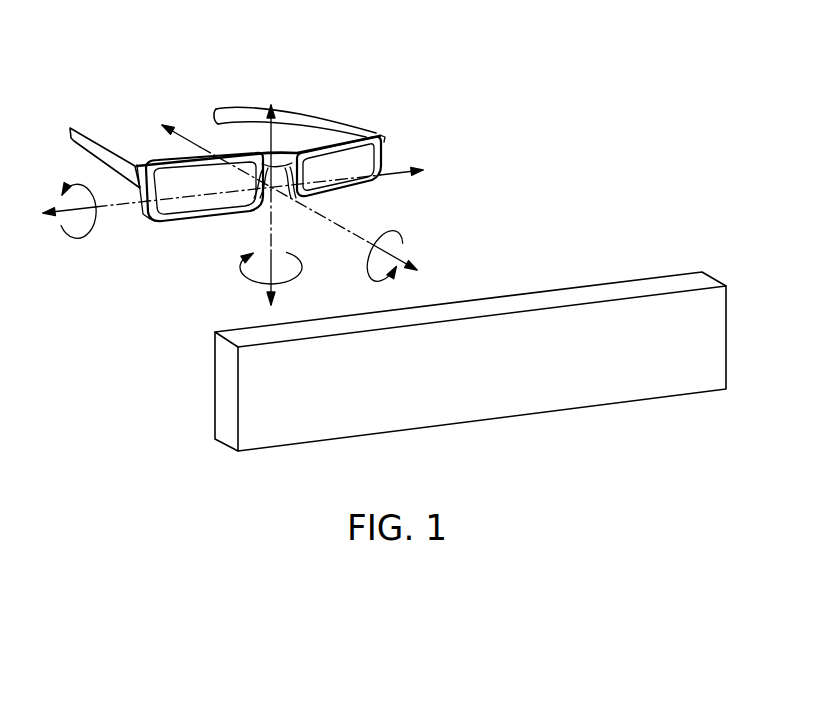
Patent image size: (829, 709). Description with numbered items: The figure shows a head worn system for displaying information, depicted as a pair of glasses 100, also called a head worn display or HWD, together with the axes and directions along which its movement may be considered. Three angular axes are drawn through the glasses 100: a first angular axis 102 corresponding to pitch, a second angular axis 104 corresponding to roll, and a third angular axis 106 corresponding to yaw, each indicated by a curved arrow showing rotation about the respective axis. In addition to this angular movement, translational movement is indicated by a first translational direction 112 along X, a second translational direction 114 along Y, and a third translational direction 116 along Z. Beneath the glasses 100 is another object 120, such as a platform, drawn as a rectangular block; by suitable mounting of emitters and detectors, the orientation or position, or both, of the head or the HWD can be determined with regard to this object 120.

The glasses 100 is at (384, 71).
The first angular axis 102 is at (80, 238).
The second angular axis 104 is at (396, 231).
The third angular axis 106 is at (241, 266).
The first translational direction 112 is at (400, 167).
The second translational direction 114 is at (274, 128).
The third translational direction 116 is at (190, 134).
The another object 120 is at (652, 278).